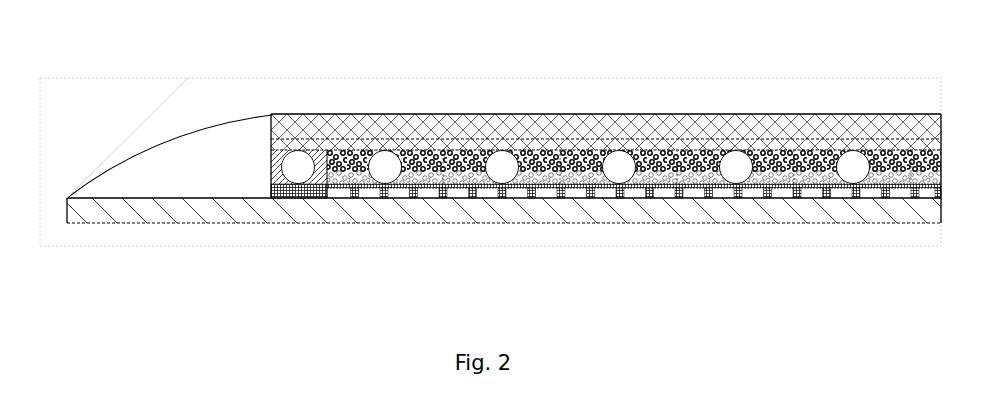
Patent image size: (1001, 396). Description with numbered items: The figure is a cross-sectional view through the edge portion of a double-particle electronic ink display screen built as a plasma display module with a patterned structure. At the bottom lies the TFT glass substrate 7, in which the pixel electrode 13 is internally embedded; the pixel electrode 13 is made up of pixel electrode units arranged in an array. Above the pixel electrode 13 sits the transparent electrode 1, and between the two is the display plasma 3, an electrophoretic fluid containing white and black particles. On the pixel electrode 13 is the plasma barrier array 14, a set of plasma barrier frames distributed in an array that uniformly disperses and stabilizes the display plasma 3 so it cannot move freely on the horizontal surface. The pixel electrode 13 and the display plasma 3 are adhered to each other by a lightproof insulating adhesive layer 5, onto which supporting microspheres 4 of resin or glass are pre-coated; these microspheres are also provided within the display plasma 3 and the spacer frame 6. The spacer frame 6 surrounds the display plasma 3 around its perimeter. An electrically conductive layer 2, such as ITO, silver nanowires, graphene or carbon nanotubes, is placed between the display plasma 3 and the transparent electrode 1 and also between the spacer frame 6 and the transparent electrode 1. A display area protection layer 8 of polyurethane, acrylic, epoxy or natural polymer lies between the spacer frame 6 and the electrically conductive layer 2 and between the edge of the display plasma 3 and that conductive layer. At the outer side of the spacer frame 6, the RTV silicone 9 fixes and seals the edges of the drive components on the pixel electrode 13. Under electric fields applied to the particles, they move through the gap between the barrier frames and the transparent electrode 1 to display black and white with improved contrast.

The transparent electrode 1 is at (307, 118).
The electrically conductive layer 2 is at (405, 132).
The display plasma 3 is at (474, 154).
The supporting microsphere 4 is at (624, 154).
The lightproof insulating adhesive layer 5 is at (718, 200).
The spacer frame 6 is at (328, 203).
The TFT glass substrate 7 is at (169, 221).
The display area protection layer 8 is at (292, 136).
The RTV silicone 9 is at (155, 148).
The pixel electrode 13 is at (522, 214).
The plasma barrier array 14 is at (797, 185).